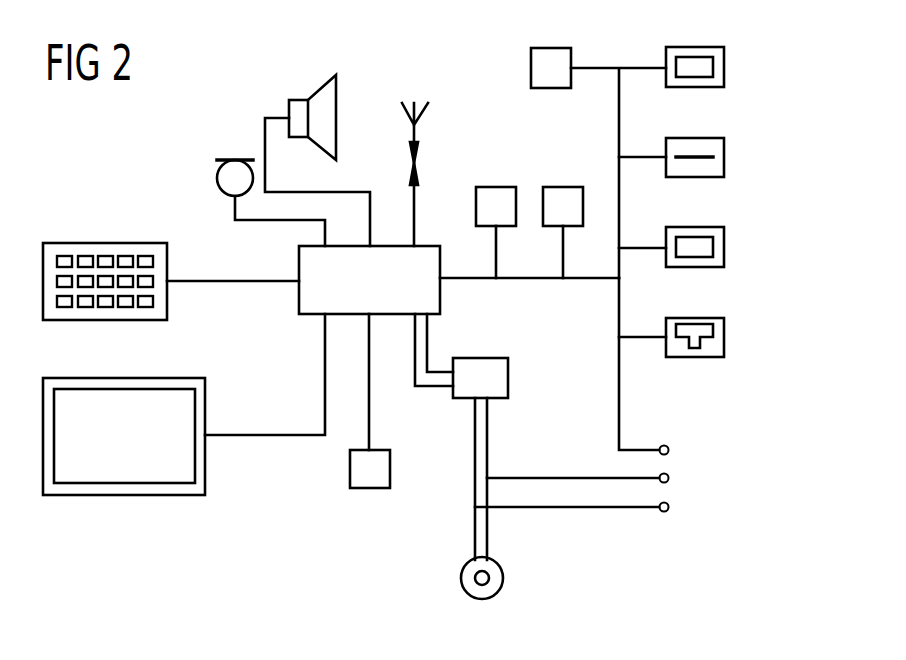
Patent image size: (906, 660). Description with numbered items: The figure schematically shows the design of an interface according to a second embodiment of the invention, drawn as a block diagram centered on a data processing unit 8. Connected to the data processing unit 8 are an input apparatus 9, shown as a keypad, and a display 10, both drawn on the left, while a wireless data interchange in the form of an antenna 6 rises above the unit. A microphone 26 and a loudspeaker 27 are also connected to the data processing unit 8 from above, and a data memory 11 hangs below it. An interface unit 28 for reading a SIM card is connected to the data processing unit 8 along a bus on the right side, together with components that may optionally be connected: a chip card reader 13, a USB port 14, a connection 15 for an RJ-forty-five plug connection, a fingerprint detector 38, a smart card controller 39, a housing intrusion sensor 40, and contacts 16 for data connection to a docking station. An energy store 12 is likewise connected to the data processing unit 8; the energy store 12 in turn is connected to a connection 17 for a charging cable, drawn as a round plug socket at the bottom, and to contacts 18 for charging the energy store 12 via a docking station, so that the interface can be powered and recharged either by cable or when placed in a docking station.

The antenna 6 is at (407, 115).
The data processing unit 8 is at (440, 292).
The input apparatus 9 is at (107, 242).
The display 10 is at (125, 496).
The data memory 11 is at (370, 489).
The energy store 12 is at (508, 378).
The chip card reader 13 is at (724, 157).
The USB port 14 is at (724, 247).
The connection for an RJ-45 plug connection 15 is at (724, 337).
The contacts 16 is at (669, 450).
The connection for a charging cable 17 is at (460, 578).
The contacts 18 is at (669, 478).
The microphone 26 is at (233, 157).
The loudspeaker 27 is at (300, 100).
The interface unit 28 is at (724, 68).
The fingerprint detector 38 is at (497, 187).
The smart card controller 39 is at (531, 68).
The housing intrusion sensor 40 is at (563, 187).